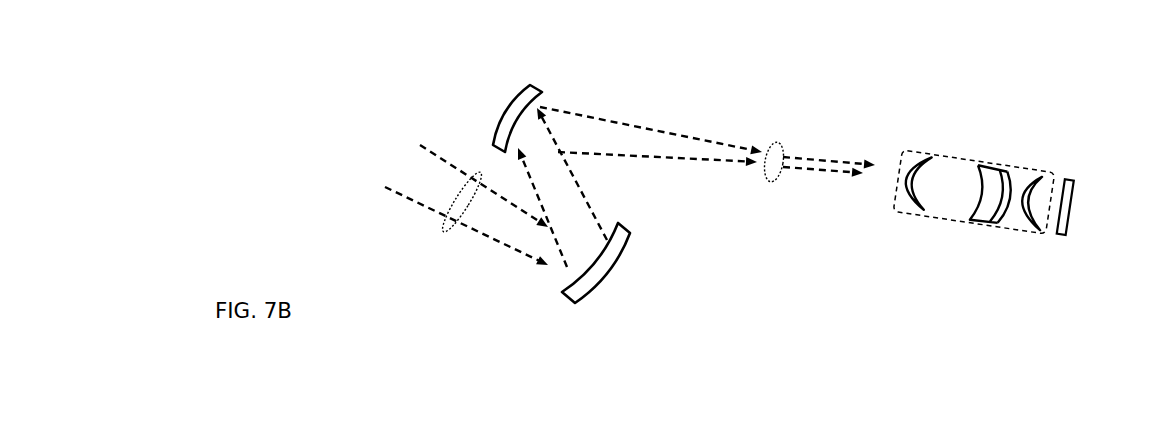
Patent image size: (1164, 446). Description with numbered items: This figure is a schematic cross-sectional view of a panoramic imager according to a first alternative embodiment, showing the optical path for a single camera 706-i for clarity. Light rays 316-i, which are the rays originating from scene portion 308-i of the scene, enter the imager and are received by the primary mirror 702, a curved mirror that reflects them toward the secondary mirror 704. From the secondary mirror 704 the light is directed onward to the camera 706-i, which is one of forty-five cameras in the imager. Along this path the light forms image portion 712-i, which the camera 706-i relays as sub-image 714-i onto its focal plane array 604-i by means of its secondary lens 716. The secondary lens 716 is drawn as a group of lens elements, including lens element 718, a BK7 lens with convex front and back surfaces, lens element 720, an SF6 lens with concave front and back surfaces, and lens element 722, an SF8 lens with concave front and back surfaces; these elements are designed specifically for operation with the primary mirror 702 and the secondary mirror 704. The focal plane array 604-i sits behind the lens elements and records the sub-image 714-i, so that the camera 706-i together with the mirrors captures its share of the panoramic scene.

The scene portion 308-i is at (395, 173).
The light rays 316-i is at (442, 230).
The secondary mirror 704 is at (510, 120).
The primary mirror 702 is at (617, 258).
The image portion 712-i is at (779, 143).
The camera 706-i is at (1068, 84).
The sub-image 714-i is at (960, 157).
The secondary lens 716 is at (905, 198).
The lens element 718 is at (967, 223).
The lens element 720 is at (993, 227).
The lens element 722 is at (1028, 232).
The focal plane array 604-i is at (1070, 180).